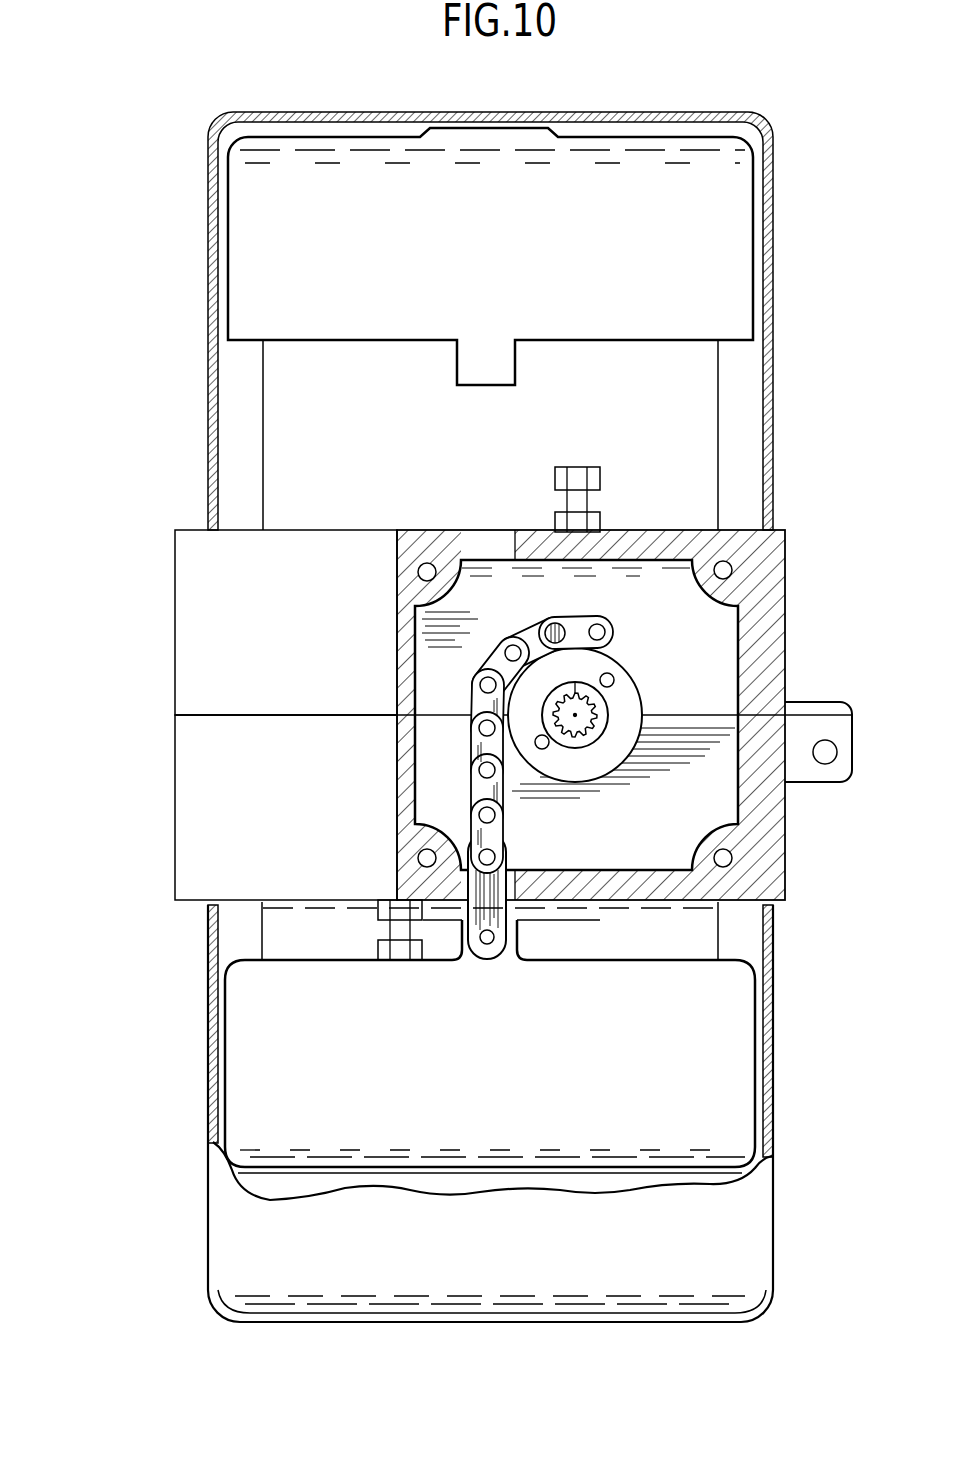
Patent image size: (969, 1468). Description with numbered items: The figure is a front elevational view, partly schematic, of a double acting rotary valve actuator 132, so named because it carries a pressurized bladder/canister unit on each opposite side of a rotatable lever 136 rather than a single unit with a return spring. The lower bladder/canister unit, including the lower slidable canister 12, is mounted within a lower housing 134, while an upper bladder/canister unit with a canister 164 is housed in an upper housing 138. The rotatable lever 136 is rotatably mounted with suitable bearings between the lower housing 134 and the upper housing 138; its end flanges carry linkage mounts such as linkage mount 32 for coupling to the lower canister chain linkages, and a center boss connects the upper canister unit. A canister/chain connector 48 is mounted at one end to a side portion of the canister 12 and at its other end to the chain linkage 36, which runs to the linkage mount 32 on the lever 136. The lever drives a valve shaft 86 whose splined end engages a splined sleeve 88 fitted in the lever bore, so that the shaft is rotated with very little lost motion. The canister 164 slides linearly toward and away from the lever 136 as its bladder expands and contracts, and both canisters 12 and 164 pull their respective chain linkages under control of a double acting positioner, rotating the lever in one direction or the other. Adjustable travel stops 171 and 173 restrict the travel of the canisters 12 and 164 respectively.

The canister 12 is at (727, 1057).
The linkage mount 32 is at (603, 622).
The chain linkage 36 is at (480, 681).
The canister/chain connector 48 is at (483, 948).
The valve shaft 86 is at (590, 718).
The splined sleeve 88 is at (582, 740).
The double acting rotary valve actuator 132 is at (120, 382).
The lower housing 134 is at (175, 805).
The rotatable lever 136 is at (648, 683).
The upper housing 138 is at (175, 620).
The canister 164 is at (725, 278).
The adjustable travel stop 171 is at (378, 913).
The adjustable travel stop 173 is at (546, 484).